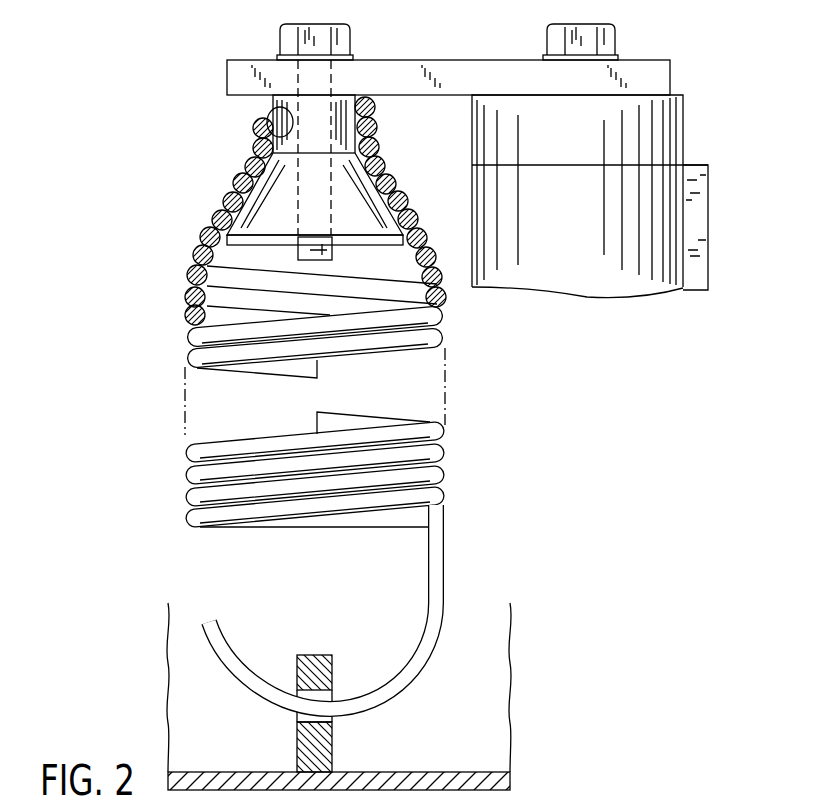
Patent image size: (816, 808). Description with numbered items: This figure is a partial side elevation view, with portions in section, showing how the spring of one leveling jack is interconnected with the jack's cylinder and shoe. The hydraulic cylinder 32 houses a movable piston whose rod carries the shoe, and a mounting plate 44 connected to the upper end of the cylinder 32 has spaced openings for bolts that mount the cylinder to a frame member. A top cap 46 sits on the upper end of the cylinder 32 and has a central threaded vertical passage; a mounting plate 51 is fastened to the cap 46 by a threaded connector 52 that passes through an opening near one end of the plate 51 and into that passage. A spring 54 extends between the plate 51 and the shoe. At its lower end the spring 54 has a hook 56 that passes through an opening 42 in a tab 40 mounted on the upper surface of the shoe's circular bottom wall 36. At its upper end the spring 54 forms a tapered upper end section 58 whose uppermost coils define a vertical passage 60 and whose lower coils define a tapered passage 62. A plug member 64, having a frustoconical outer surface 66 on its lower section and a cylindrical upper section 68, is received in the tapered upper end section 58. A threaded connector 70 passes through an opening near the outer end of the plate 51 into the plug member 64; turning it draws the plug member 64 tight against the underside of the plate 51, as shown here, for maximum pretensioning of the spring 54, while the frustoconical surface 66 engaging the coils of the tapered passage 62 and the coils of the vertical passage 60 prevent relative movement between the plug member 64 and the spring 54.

The threaded connector 70 is at (312, 22).
The mounting plate 51 is at (400, 61).
The threaded connector 52 is at (598, 28).
The top cap 46 is at (684, 140).
The mounting plate 44 is at (709, 222).
The cylinder 32 is at (588, 297).
The vertical passage 60 is at (268, 111).
The cylindrical upper section 68 is at (346, 125).
The frustoconical outer surface 66 is at (375, 184).
The tapered upper end section 58 is at (232, 185).
The tapered passage 62 is at (197, 272).
The plug member 64 is at (371, 240).
The spring 54 is at (447, 432).
The hook 56 is at (237, 635).
The tab 40 is at (306, 655).
The opening 42 is at (310, 717).
The bottom wall 36 is at (413, 771).